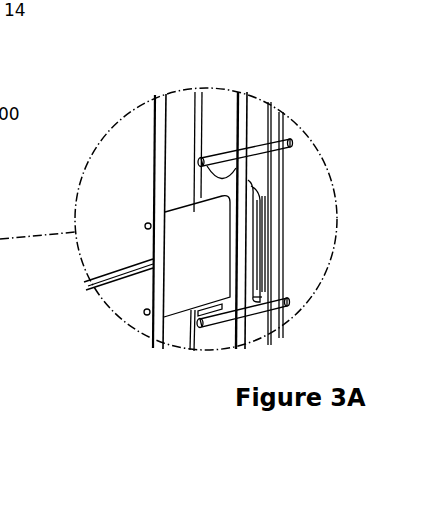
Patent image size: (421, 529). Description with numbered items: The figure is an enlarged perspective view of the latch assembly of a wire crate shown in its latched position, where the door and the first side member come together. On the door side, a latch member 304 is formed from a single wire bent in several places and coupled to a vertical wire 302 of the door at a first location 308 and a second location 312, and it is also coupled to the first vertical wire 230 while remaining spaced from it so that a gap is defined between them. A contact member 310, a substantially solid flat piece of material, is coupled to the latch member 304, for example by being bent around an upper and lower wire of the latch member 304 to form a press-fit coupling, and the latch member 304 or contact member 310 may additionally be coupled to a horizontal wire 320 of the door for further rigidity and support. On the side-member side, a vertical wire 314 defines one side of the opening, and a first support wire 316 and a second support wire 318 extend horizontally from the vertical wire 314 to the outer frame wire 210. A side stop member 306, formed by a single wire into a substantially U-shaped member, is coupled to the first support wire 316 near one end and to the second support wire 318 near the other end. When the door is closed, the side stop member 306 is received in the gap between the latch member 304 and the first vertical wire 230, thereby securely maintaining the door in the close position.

The vertical wire 302 is at (160, 120).
The vertical wire 314 is at (184, 92).
The first vertical wire 230 is at (247, 117).
The outer frame wire 210 is at (275, 168).
The first support wire 316 is at (296, 147).
The second support wire 318 is at (285, 300).
The side stop member 306 is at (249, 200).
The latch member 304 is at (261, 244).
The contact member 310 is at (200, 271).
The first location 308 is at (145, 216).
The second location 312 is at (146, 298).
The horizontal wire 320 is at (112, 282).